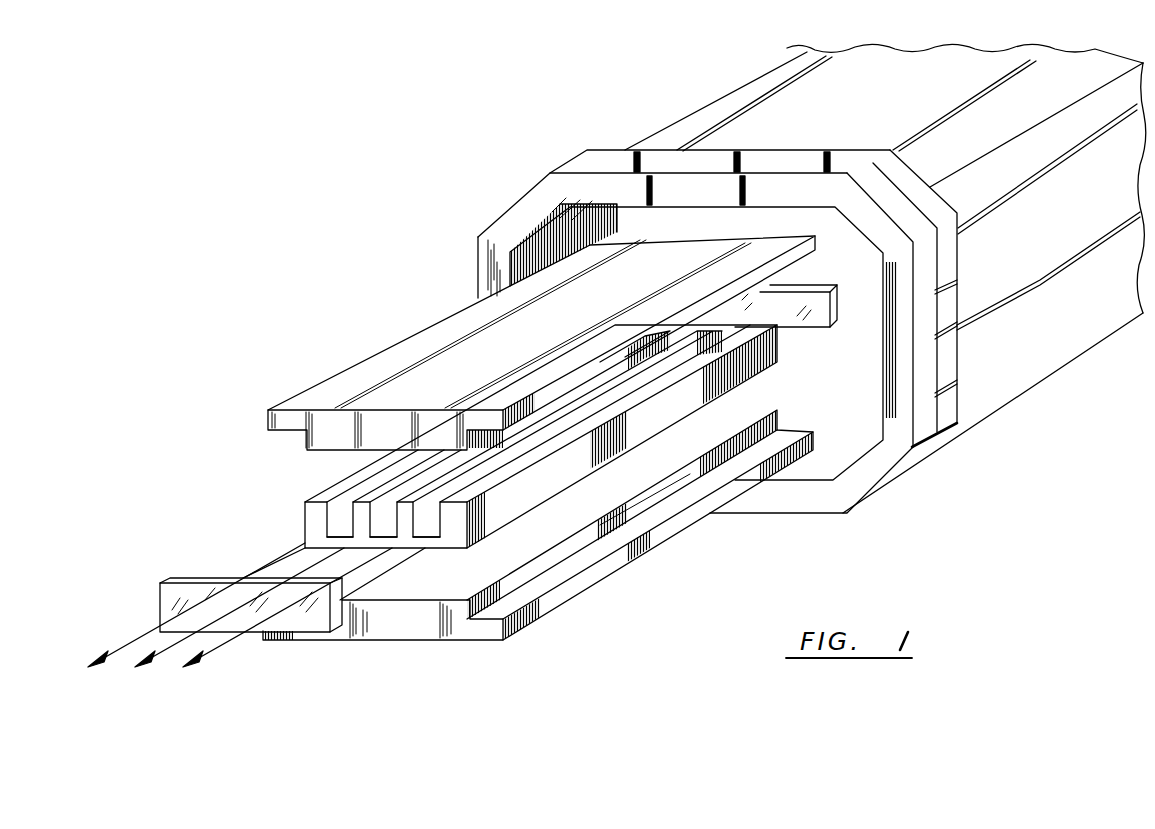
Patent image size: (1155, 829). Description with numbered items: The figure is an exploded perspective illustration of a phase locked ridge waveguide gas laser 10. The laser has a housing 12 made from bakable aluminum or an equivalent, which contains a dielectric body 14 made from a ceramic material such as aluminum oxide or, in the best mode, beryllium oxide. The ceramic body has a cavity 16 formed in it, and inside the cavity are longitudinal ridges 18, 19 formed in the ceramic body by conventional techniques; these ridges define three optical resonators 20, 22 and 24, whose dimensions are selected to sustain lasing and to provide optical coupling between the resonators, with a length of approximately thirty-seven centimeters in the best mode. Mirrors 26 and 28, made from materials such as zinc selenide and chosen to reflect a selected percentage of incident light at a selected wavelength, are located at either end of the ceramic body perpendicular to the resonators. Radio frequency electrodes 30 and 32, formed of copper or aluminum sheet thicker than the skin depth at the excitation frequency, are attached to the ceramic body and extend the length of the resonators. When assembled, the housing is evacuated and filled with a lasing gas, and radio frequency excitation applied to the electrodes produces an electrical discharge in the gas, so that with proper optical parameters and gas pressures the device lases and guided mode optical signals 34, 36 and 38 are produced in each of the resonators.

The phase locked ridge waveguide gas laser 10 is at (402, 122).
The housing 12 is at (745, 93).
The dielectric body 14 is at (760, 367).
The cavity 16 is at (372, 494).
The longitudinal ridge 18 is at (387, 498).
The longitudinal ridge 19 is at (437, 503).
The optical resonator 20 is at (340, 520).
The optical resonator 22 is at (387, 533).
The optical resonator 24 is at (433, 533).
The mirror 26 is at (172, 583).
The mirror 28 is at (816, 328).
The radio frequency electrode 30 is at (418, 333).
The radio frequency electrode 32 is at (690, 520).
The guided mode optical signal 34 is at (110, 654).
The guided mode optical signal 36 is at (163, 652).
The guided mode optical signal 38 is at (215, 650).